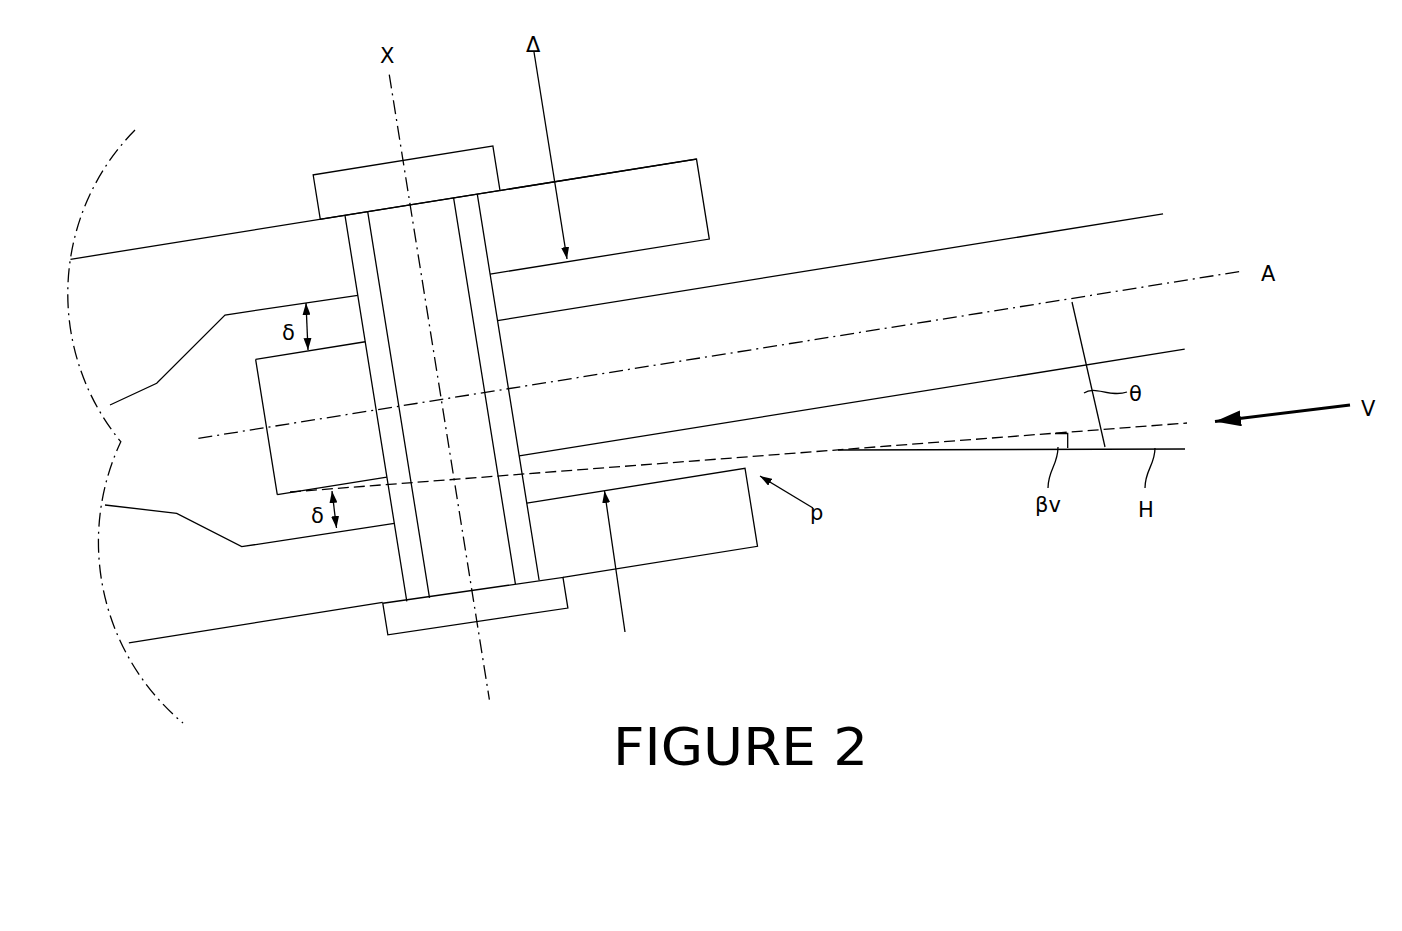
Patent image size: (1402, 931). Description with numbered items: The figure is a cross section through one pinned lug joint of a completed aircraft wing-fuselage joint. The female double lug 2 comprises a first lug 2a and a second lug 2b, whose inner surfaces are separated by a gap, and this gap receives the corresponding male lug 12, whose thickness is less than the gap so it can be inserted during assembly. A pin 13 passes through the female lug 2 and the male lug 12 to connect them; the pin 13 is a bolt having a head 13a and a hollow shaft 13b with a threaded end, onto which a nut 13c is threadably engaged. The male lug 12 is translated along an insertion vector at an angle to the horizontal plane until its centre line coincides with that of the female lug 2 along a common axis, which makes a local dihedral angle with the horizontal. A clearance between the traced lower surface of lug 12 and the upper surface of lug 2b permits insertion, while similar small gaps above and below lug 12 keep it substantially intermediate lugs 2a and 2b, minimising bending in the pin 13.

The double lug 2 is at (617, 391).
The first lug 2a is at (653, 180).
The second lug 2b is at (723, 540).
The male lug 12 is at (777, 293).
The pin 13 is at (352, 113).
The head 13a is at (462, 165).
The hollow shaft 13b is at (363, 252).
The nut 13c is at (532, 603).